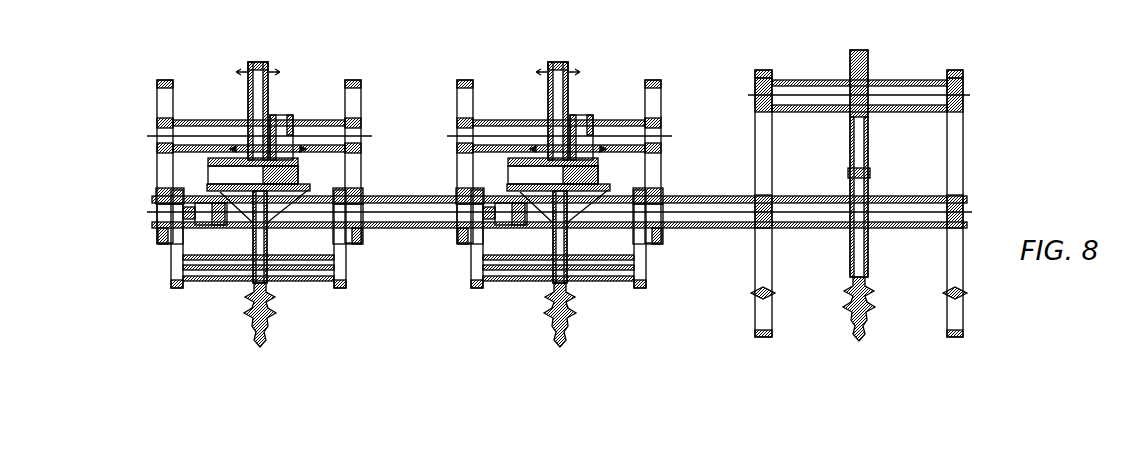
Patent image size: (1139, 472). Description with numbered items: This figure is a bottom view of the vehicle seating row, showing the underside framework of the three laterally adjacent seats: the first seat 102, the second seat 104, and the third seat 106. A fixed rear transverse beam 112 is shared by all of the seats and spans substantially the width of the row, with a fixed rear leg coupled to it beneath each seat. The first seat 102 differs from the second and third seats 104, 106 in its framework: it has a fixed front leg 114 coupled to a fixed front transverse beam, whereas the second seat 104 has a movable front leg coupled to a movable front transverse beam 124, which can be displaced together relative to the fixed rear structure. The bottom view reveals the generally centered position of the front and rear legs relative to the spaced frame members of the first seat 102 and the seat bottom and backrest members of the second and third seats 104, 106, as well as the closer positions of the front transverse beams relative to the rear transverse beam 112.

The first seat 102 is at (878, 358).
The second seat 104 is at (560, 358).
The third seat 106 is at (260, 358).
The fixed rear transverse beam 112 is at (398, 215).
The fixed front leg 114 is at (870, 83).
The front transverse beam 124 is at (163, 137).